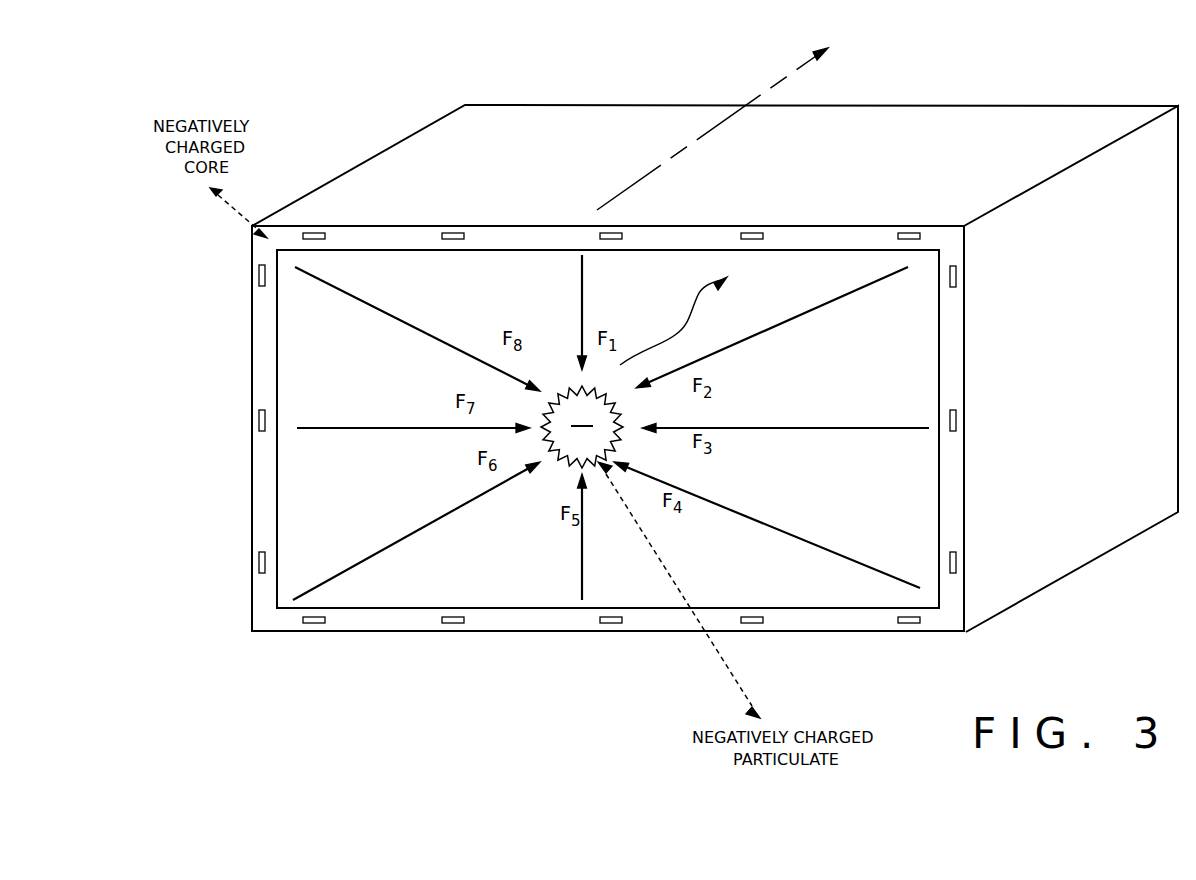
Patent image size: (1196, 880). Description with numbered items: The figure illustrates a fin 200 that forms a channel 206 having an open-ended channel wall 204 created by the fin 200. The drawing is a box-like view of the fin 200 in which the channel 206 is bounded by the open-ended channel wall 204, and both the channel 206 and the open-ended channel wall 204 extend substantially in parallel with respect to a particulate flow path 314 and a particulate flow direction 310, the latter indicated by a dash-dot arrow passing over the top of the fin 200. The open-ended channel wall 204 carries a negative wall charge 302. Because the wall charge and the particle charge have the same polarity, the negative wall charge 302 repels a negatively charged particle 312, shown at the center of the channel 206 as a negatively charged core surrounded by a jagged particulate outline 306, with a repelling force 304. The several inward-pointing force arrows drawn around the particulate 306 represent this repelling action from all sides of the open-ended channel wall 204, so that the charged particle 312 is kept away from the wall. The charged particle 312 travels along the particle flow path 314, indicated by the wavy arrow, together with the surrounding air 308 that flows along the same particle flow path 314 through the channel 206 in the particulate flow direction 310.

The fin 200 is at (1048, 74).
The open-ended channel wall 204 is at (1088, 421).
The channel 206 is at (861, 520).
The negative wall charge 302 is at (257, 272).
The repelling force 304 is at (358, 430).
The negatively charged particulate 306 is at (560, 460).
The surrounding air 308 is at (478, 311).
The particulate flow direction 310 is at (784, 80).
The negatively charged particle 312 is at (582, 430).
The particulate flow path 314 is at (694, 310).